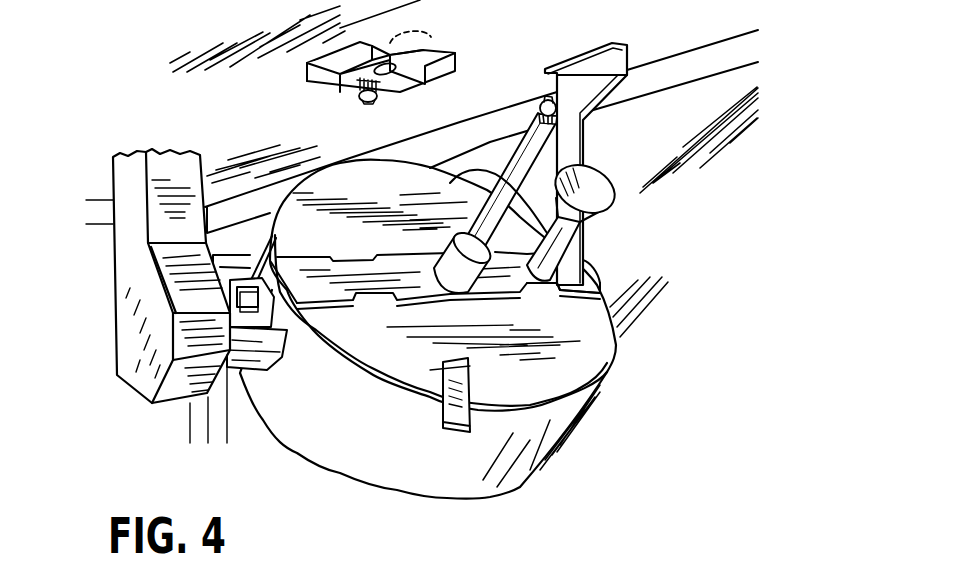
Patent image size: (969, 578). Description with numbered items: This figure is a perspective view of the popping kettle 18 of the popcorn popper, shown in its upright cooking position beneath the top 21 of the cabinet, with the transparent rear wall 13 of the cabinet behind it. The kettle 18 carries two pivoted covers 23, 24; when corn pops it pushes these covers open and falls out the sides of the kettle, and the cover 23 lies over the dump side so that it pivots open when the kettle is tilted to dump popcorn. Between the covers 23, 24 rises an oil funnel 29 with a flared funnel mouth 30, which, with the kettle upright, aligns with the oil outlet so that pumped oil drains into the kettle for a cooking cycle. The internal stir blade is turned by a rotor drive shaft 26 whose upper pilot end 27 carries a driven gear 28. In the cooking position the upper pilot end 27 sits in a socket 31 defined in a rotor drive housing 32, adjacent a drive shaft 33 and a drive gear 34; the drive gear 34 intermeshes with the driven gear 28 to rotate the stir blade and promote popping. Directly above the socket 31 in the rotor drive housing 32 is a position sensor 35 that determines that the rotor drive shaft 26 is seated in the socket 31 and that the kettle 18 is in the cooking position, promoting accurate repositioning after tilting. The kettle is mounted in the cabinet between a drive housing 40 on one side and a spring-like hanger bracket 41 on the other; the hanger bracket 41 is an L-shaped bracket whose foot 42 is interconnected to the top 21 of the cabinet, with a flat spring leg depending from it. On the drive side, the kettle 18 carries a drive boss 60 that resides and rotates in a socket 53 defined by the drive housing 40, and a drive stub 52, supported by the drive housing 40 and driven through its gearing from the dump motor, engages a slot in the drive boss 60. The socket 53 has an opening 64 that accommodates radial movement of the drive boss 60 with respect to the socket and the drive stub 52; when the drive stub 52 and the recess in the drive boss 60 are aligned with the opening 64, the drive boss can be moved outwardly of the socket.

The rear wall 13 is at (464, 116).
The popping kettle 18 is at (330, 447).
The top 21 is at (329, 79).
The cover 23 is at (490, 395).
The cover 24 is at (435, 268).
The rotor drive shaft 26 is at (452, 182).
The upper pilot end 27 is at (556, 105).
The driven gear 28 is at (541, 100).
The oil funnel 29 is at (573, 265).
The flared funnel mouth 30 is at (608, 192).
The socket 31 is at (397, 72).
The rotor drive housing 32 is at (329, 84).
The drive shaft 33 is at (370, 103).
The drive gear 34 is at (359, 85).
The position sensor 35 is at (433, 37).
The drive housing 40 is at (113, 253).
The spring-like hanger bracket 41 is at (590, 150).
The foot 42 is at (614, 45).
The drive stub 52 is at (244, 306).
The socket 53 is at (276, 348).
The drive boss 60 is at (261, 267).
The opening 64 is at (249, 258).